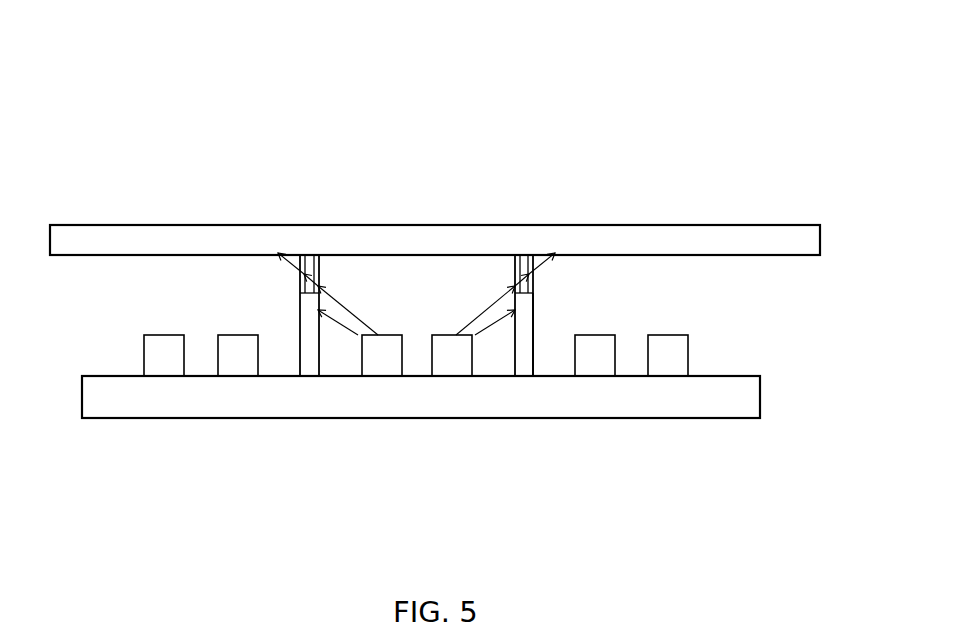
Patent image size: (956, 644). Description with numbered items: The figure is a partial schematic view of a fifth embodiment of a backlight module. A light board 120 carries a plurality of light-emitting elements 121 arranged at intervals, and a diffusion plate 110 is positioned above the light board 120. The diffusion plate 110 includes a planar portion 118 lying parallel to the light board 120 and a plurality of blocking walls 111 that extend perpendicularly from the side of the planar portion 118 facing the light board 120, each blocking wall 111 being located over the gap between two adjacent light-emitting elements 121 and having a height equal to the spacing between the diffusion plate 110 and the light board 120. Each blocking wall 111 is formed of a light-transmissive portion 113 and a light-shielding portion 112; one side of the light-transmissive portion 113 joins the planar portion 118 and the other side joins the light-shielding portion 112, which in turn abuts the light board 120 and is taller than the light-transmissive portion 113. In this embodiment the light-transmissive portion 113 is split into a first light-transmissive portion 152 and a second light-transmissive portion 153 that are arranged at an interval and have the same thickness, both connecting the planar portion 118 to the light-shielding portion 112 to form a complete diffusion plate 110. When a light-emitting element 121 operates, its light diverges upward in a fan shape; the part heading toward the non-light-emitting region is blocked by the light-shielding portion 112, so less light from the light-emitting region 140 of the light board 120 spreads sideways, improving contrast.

The diffusion plate 110 is at (383, 83).
The planar portion 118 is at (240, 237).
The blocking wall 111 is at (318, 291).
The light-transmissive portion 113 is at (628, 107).
The first light-transmissive portion 152 is at (526, 260).
The second light-transmissive portion 153 is at (532, 282).
The light-shielding portion 112 is at (533, 347).
The light board 120 is at (525, 402).
The light-emitting region 140 is at (345, 377).
The light-emitting element 121 is at (467, 354).